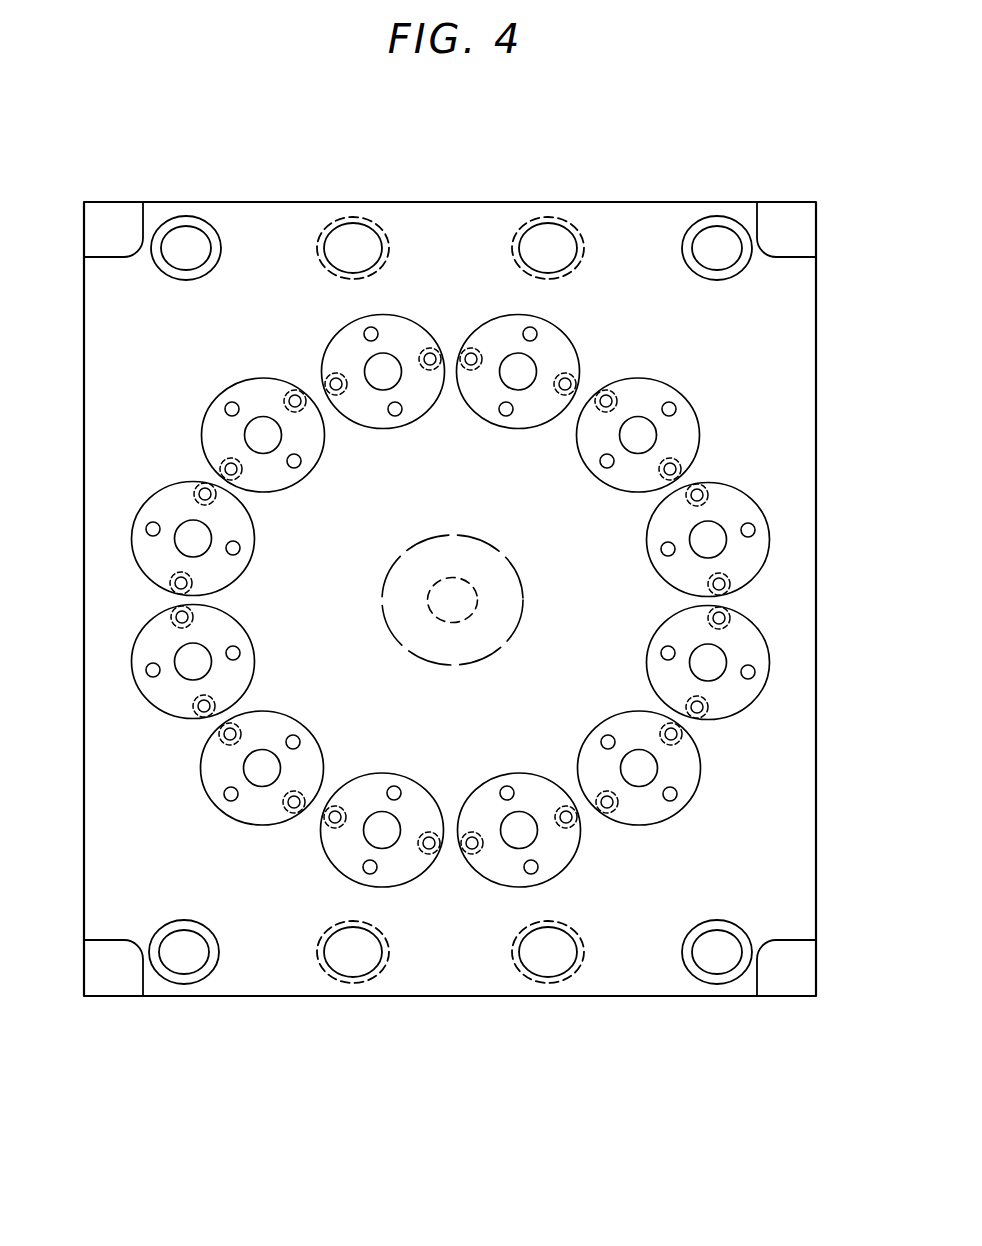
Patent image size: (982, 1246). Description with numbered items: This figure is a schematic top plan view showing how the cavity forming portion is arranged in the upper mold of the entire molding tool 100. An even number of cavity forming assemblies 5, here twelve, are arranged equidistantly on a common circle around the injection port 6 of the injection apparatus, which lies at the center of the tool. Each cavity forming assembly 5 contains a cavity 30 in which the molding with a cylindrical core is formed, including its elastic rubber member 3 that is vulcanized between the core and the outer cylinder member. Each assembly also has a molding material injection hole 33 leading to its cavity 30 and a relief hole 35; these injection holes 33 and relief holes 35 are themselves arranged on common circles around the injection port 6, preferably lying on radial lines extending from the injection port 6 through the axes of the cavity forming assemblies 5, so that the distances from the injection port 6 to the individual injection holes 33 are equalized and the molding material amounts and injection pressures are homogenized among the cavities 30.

The mold plate 100 is at (629, 982).
The injection port 6 is at (460, 582).
The cavity forming assembly 5 is at (502, 314).
The cavity 30 is at (345, 362).
The molding material injection hole 33 is at (393, 417).
The relief hole 35 is at (536, 331).
The elastic rubber member 3 is at (731, 690).